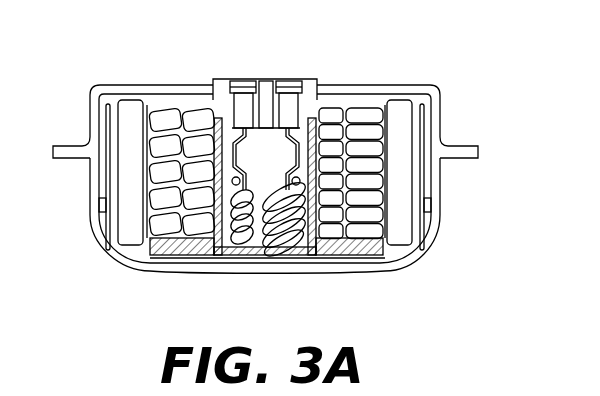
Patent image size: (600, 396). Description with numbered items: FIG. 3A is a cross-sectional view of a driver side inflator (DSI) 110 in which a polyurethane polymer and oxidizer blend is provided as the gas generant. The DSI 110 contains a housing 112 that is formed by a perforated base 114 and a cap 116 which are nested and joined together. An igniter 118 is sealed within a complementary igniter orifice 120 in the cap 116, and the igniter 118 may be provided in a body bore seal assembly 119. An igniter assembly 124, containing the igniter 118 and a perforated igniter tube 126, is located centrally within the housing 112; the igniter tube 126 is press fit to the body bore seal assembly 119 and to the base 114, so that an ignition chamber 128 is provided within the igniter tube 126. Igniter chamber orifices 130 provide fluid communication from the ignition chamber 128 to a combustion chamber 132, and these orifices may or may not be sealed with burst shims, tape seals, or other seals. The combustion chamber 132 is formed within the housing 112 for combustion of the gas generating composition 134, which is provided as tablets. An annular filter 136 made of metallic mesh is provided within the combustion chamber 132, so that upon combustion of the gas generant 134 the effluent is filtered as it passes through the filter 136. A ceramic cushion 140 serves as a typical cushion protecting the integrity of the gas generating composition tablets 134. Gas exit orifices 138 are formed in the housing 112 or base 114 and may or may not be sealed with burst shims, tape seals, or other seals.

The driver side inflator 110 is at (118, 57).
The housing 112 is at (438, 173).
The perforated base 114 is at (423, 252).
The cap 116 is at (405, 85).
The igniter 118 is at (268, 152).
The body bore seal assembly 119 is at (292, 90).
The igniter orifice 120 is at (337, 85).
The igniter assembly 124 is at (255, 152).
The perforated igniter tube 126 is at (235, 253).
The ignition chamber 128 is at (253, 237).
The igniter chamber orifices 130 is at (323, 230).
The combustion chamber 132 is at (150, 212).
The gas generating composition 134 is at (162, 148).
The annular filter 136 is at (402, 168).
The gas exit orifices 138 is at (431, 204).
The ceramic cushion 140 is at (158, 253).